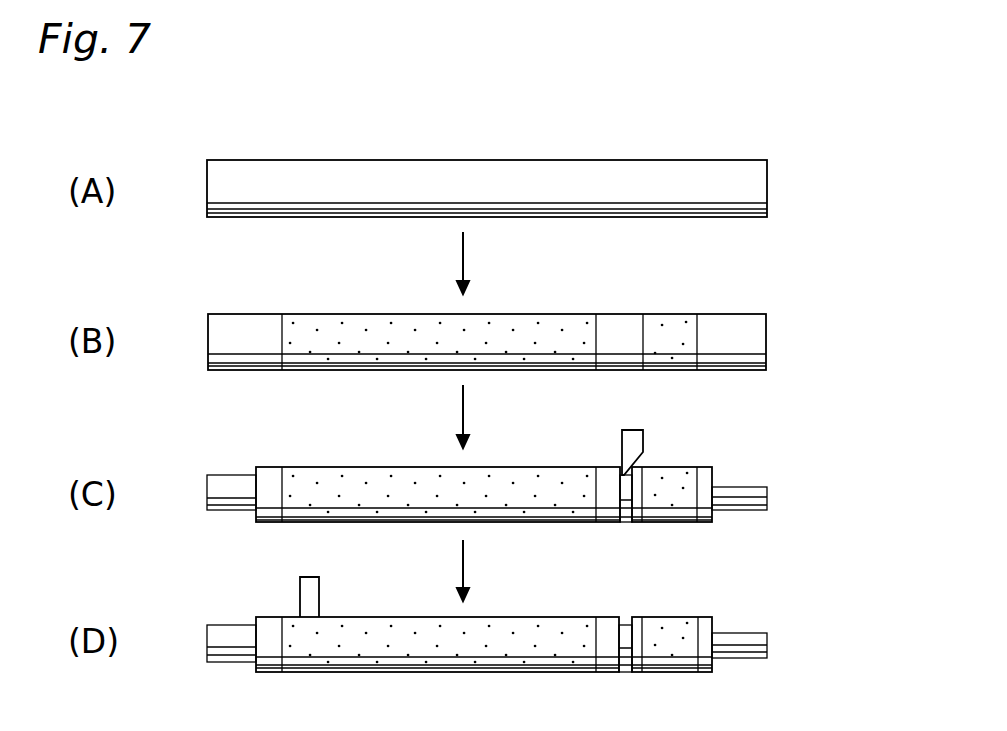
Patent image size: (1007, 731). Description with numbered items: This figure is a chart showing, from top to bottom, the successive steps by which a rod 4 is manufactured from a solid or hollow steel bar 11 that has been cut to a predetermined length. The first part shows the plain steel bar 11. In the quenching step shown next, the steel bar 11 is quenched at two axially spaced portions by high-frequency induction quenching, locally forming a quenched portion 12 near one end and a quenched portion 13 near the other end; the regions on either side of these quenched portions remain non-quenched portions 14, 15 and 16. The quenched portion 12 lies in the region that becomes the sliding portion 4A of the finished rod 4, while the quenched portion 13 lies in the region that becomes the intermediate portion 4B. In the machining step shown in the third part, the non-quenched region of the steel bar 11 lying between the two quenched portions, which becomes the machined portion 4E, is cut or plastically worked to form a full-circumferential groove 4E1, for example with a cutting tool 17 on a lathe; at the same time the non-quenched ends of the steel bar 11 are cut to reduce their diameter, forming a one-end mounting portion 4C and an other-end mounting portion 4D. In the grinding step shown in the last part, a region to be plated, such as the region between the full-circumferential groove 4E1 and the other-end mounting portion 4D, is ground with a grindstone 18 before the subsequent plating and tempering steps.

The rod 4 is at (419, 500).
The sliding portion 4A is at (362, 510).
The intermediate portion 4B is at (684, 518).
The one-end mounting portion 4C is at (220, 504).
The other-end mounting portion 4D is at (752, 506).
The machined portion 4E is at (606, 516).
The full-circumferential groove 4E1 is at (622, 522).
The steel bar 11 is at (465, 178).
The quenched portion 12 is at (370, 330).
The quenched portion 13 is at (678, 326).
The non-quenched portion 14 is at (256, 330).
The non-quenched portion 15 is at (623, 326).
The non-quenched portion 16 is at (756, 337).
The cutting tool 17 is at (632, 440).
The grindstone 18 is at (302, 590).